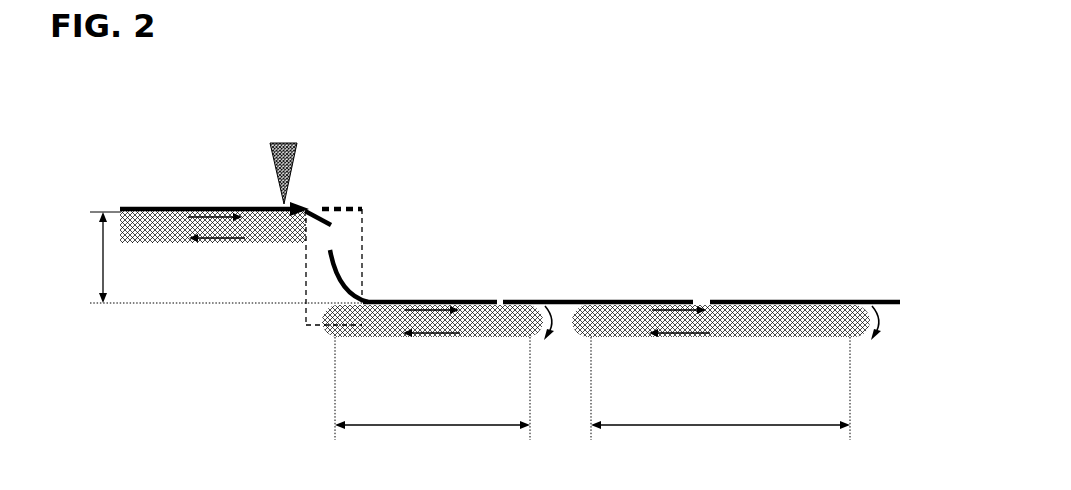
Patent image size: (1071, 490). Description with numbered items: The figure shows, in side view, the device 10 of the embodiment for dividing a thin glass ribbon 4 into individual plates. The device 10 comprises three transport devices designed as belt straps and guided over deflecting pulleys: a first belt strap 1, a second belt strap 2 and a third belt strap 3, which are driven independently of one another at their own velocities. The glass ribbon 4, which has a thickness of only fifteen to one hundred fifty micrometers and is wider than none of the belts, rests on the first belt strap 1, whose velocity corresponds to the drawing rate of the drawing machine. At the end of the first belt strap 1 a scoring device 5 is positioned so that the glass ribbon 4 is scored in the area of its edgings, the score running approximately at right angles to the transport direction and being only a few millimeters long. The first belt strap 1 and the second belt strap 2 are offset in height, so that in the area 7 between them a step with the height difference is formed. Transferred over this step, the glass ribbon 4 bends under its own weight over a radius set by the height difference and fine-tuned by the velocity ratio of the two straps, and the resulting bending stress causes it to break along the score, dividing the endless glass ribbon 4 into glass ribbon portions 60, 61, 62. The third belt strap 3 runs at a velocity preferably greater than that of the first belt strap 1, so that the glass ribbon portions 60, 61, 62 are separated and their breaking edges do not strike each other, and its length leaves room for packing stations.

The first belt strap 1 is at (155, 208).
The second belt strap 2 is at (345, 336).
The third belt strap 3 is at (615, 327).
The glass ribbon 4 is at (258, 207).
The scoring device 5 is at (272, 143).
The area between first and second belt straps 7 is at (358, 208).
The device 10 is at (632, 143).
The glass ribbon portion 60 is at (462, 301).
The glass ribbon portion 61 is at (593, 301).
The glass ribbon portion 62 is at (815, 301).